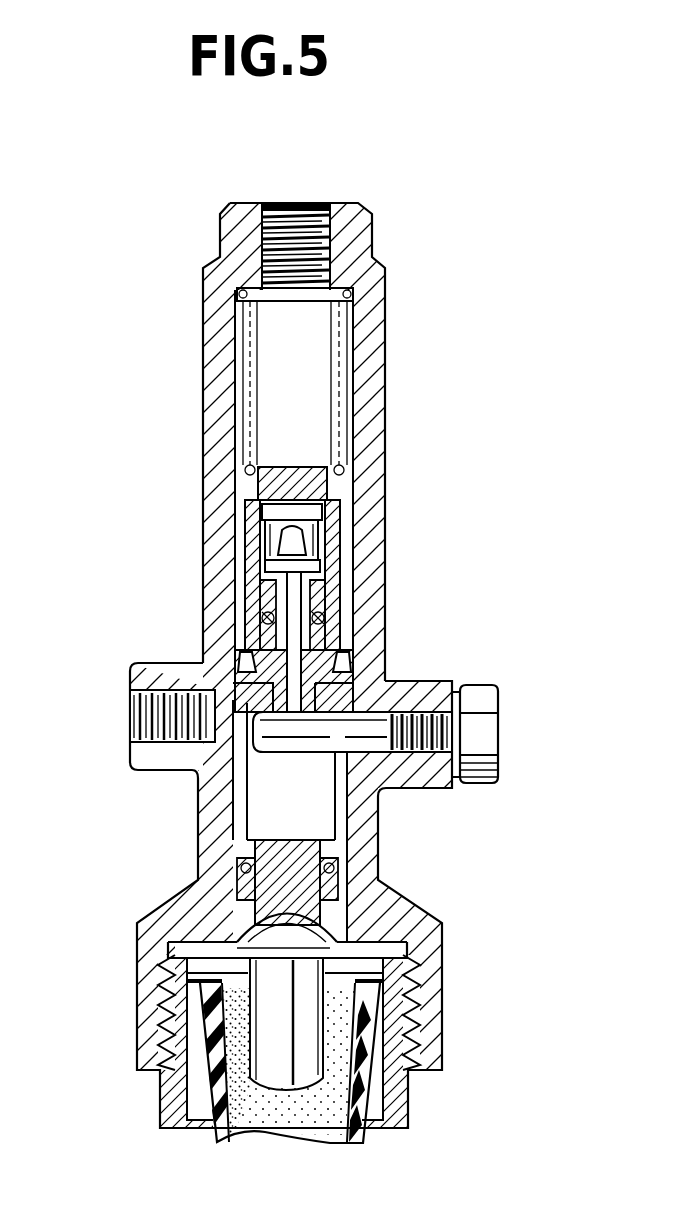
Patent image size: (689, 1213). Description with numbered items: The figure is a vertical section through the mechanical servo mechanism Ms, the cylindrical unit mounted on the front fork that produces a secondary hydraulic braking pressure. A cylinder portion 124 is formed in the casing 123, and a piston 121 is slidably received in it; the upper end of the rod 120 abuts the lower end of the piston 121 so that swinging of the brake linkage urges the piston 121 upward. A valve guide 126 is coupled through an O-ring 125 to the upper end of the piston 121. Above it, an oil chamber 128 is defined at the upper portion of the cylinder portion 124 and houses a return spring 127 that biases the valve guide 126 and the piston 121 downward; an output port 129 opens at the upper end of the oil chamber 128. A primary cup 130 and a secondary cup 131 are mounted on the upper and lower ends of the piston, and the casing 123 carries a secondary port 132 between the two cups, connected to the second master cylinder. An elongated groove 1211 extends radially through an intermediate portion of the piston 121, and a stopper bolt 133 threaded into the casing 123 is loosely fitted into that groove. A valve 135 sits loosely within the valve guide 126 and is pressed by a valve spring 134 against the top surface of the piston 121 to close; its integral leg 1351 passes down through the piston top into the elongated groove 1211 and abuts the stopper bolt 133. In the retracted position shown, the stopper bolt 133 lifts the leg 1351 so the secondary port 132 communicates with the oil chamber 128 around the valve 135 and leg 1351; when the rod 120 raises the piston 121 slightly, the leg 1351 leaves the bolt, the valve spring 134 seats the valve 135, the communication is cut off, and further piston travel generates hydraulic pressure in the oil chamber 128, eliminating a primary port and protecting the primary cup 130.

The rod 120 is at (276, 1088).
The piston 121 is at (354, 910).
The elongated groove 1211 is at (313, 830).
The casing 123 is at (372, 340).
The cylinder portion 124 is at (232, 808).
The O-ring 125 is at (326, 618).
The valve guide 126 is at (352, 587).
The return spring 127 is at (240, 294).
The oil chamber 128 is at (318, 395).
The output port 129 is at (322, 206).
The primary cup 130 is at (380, 660).
The secondary cup 131 is at (236, 880).
The secondary port 132 is at (140, 730).
The stopper bolt 133 is at (296, 748).
The valve spring 134 is at (262, 522).
The valve 135 is at (335, 548).
The leg 1351 is at (285, 640).
The mechanical servo mechanism Ms is at (440, 462).